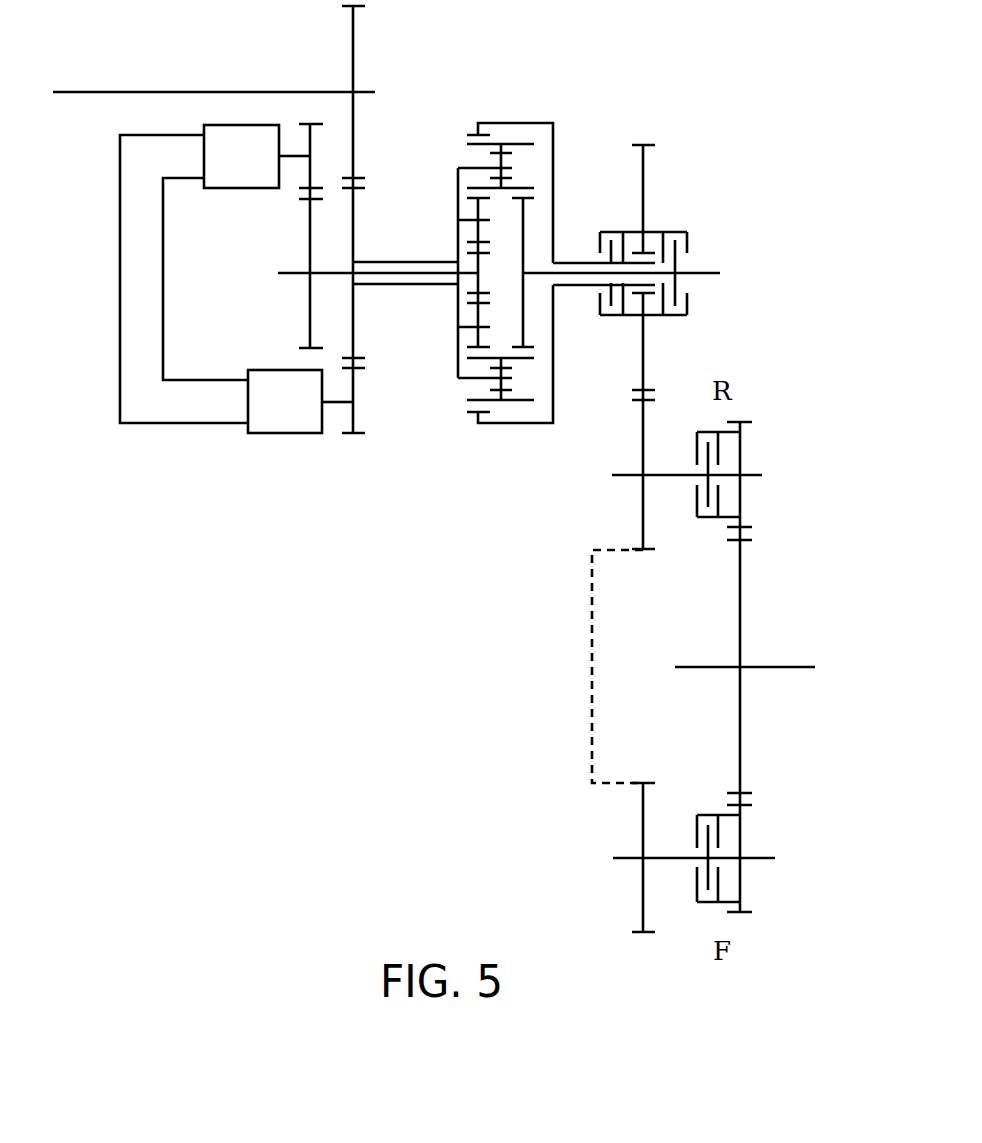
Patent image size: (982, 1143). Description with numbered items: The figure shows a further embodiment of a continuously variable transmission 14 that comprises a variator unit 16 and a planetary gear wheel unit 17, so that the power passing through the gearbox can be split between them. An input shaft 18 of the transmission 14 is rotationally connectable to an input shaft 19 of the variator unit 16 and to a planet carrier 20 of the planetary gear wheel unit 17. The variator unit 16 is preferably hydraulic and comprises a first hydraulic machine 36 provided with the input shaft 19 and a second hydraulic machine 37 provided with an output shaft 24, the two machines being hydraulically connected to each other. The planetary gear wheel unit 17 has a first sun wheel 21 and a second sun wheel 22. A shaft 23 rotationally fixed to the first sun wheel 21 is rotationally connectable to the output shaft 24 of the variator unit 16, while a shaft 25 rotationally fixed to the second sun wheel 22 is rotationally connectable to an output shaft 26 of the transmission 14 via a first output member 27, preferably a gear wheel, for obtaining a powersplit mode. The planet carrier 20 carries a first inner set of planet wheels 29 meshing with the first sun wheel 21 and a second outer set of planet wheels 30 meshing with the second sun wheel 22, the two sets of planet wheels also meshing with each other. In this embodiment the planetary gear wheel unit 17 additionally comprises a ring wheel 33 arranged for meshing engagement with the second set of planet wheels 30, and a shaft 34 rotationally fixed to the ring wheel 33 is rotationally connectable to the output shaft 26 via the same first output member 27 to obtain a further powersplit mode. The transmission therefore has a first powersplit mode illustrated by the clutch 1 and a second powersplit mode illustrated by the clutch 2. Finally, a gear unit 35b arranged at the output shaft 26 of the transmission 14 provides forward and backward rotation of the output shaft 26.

The transmission 14 is at (604, 80).
The variator unit 16 is at (100, 342).
The planetary gear wheel unit 17 is at (478, 457).
The input shaft 18 is at (102, 92).
The input shaft 19 is at (337, 402).
The planet carrier 20 is at (458, 205).
The first sun wheel 21 is at (476, 290).
The second sun wheel 22 is at (525, 234).
The shaft 23 is at (413, 266).
The output shaft 24 is at (293, 155).
The shaft 25 is at (583, 284).
The output shaft 26 is at (764, 667).
The first output member 27 is at (646, 354).
The first inner set of planet wheels 29 is at (470, 337).
The second outer set of planet wheels 30 is at (520, 400).
The ring wheel 33 is at (510, 123).
The shaft 34 is at (582, 262).
The gear unit 35b is at (772, 558).
The first hydraulic machine 36 is at (273, 417).
The second hydraulic machine 37 is at (237, 133).
The clutch 1 is at (611, 254).
The clutch 2 is at (675, 254).